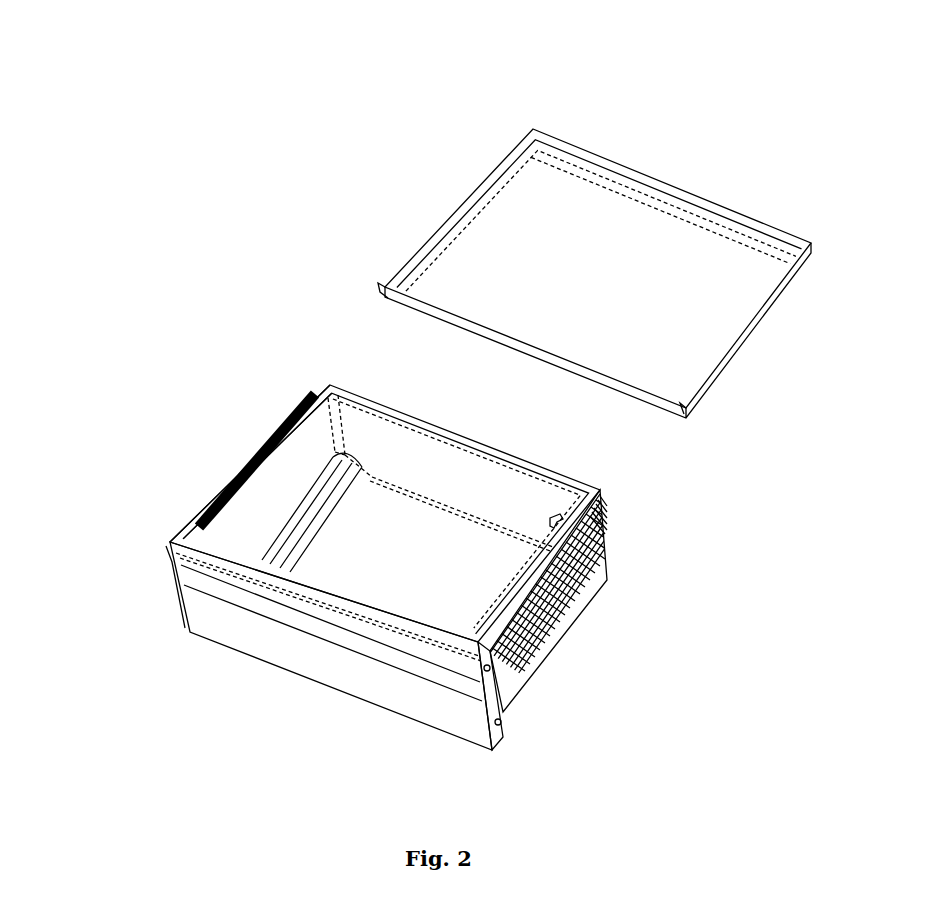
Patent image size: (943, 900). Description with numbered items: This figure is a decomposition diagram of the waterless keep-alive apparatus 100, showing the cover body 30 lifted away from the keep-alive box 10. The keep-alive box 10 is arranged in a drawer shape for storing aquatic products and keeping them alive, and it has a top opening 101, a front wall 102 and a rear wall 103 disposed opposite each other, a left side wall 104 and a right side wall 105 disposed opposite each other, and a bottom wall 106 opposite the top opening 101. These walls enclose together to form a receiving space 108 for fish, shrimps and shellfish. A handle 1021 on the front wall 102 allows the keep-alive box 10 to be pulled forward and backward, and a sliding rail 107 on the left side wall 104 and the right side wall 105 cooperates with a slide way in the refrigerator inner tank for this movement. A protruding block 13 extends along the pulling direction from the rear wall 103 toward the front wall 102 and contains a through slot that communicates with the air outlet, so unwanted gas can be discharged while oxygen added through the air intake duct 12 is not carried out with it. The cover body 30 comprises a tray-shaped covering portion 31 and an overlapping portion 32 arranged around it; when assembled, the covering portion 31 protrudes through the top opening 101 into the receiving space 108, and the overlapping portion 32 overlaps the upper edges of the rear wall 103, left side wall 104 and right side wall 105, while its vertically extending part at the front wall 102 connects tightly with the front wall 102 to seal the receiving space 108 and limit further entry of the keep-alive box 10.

The waterless keep-alive apparatus 100 is at (50, 46).
The keep-alive box 10 is at (181, 536).
The top opening 101 is at (235, 525).
The front wall 102 is at (334, 655).
The handle 1021 is at (275, 598).
The rear wall 103 is at (453, 465).
The left side wall 104 is at (283, 477).
The right side wall 105 is at (547, 633).
The bottom wall 106 is at (330, 383).
The sliding rail 107 is at (577, 587).
The receiving space 108 is at (503, 497).
The air intake duct 12 is at (605, 528).
The protruding block 13 is at (307, 417).
The cover body 30 is at (487, 207).
The covering portion 31 is at (594, 200).
The overlapping portion 32 is at (510, 156).